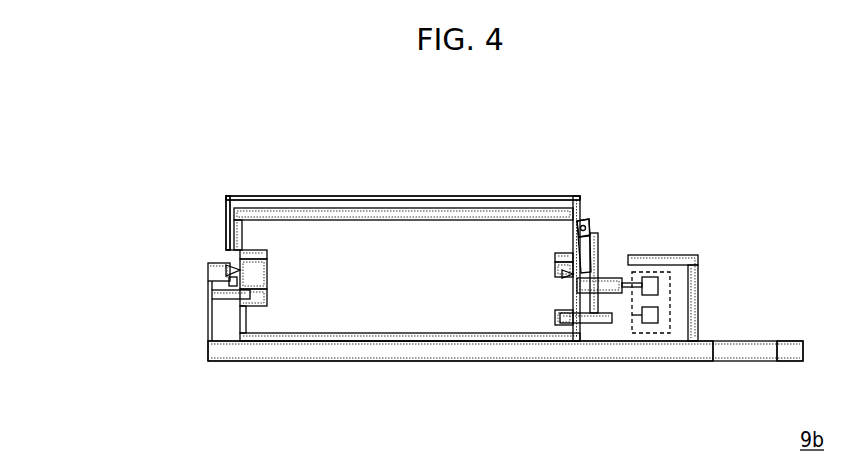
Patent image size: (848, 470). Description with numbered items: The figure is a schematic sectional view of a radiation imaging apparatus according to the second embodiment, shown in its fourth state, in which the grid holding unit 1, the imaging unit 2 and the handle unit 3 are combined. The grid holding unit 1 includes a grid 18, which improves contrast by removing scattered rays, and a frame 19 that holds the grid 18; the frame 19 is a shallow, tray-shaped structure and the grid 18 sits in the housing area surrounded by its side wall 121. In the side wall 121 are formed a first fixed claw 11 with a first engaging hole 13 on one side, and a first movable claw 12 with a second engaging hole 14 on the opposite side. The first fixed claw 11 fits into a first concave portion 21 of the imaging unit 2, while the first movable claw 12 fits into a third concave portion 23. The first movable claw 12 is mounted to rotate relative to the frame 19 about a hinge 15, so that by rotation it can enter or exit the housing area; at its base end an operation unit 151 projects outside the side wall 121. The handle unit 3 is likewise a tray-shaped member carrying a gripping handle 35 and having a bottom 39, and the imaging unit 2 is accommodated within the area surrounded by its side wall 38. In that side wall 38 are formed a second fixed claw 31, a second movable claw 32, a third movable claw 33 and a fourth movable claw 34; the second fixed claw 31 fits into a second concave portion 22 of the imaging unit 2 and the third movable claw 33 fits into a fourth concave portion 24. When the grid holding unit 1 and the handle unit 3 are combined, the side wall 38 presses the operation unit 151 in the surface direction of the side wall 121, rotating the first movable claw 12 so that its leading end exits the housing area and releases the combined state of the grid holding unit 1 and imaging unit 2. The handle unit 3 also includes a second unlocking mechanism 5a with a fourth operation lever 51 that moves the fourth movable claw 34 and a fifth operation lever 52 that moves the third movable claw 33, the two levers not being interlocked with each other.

The grid holding unit 1 is at (338, 170).
The imaging unit 2 is at (380, 225).
The handle unit 3 is at (419, 390).
The second unlocking mechanism 5a is at (672, 283).
The first fixed claw 11 is at (268, 270).
The first movable claw 12 is at (556, 266).
The first engaging hole 13 is at (232, 268).
The second engaging hole 14 is at (571, 274).
The hinge 15 is at (588, 220).
The grid 18 is at (473, 210).
The frame 19 is at (423, 196).
The first concave portion 21 is at (267, 251).
The second concave portion 22 is at (268, 302).
The third concave portion 23 is at (556, 256).
The fourth concave portion 24 is at (556, 318).
The second fixed claw 31 is at (212, 296).
The second movable claw 32 is at (212, 272).
The third movable claw 33 is at (595, 322).
The fourth movable claw 34 is at (608, 286).
The gripping handle 35 is at (788, 353).
The side wall 38 is at (208, 350).
The bottom 39 is at (366, 362).
The fourth operation lever 51 is at (652, 275).
The fifth operation lever 52 is at (660, 320).
The side wall 121 is at (226, 208).
The operation unit 151 is at (589, 226).